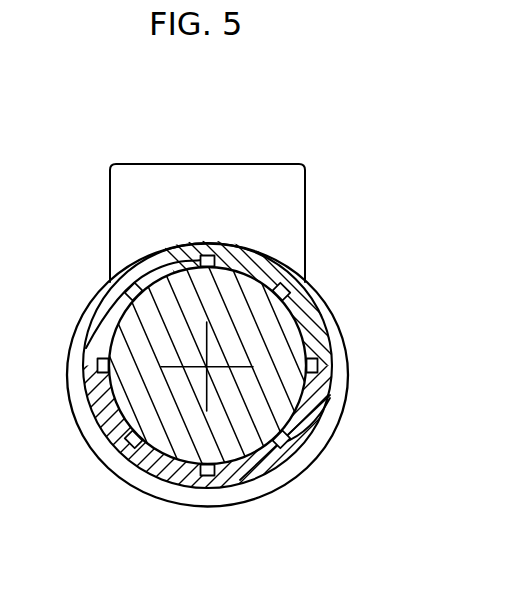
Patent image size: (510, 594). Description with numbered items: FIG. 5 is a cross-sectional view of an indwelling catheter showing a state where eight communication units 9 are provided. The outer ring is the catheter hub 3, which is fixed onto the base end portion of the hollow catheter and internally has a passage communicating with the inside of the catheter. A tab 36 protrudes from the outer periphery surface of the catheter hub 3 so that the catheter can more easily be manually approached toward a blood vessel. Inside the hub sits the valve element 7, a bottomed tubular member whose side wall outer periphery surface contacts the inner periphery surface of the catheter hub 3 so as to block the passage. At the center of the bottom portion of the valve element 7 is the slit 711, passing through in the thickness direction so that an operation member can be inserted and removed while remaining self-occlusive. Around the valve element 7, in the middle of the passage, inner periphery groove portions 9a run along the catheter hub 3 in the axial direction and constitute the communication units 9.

The tab 36 is at (245, 183).
The catheter hub 3 is at (94, 297).
The valve element 7 is at (187, 460).
The communication unit 9 is at (207, 257).
The inner periphery groove portion 9a is at (287, 292).
The slit 711 is at (208, 394).